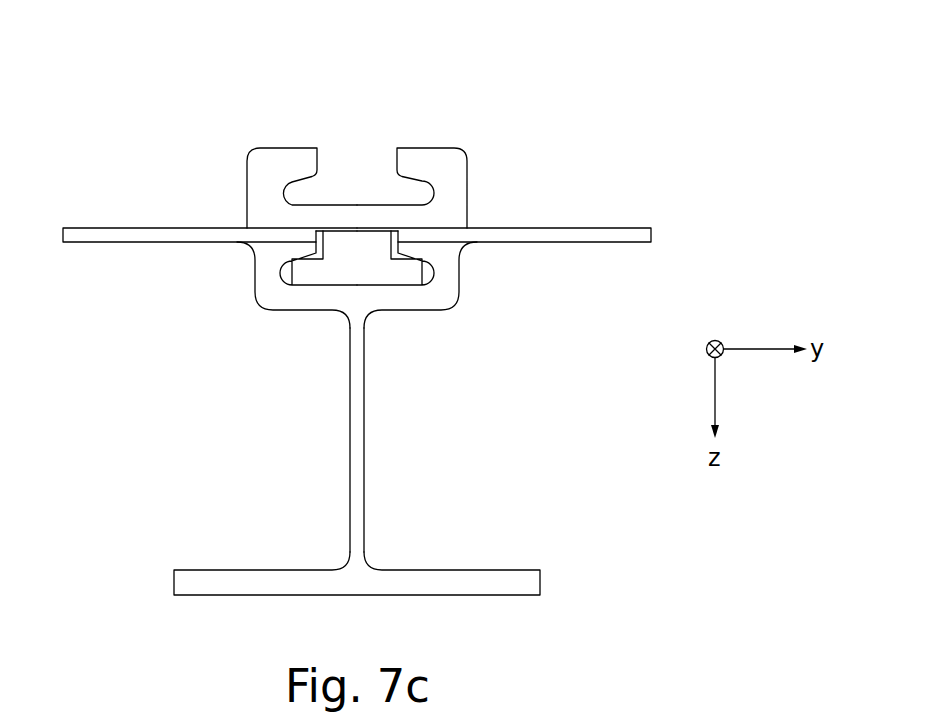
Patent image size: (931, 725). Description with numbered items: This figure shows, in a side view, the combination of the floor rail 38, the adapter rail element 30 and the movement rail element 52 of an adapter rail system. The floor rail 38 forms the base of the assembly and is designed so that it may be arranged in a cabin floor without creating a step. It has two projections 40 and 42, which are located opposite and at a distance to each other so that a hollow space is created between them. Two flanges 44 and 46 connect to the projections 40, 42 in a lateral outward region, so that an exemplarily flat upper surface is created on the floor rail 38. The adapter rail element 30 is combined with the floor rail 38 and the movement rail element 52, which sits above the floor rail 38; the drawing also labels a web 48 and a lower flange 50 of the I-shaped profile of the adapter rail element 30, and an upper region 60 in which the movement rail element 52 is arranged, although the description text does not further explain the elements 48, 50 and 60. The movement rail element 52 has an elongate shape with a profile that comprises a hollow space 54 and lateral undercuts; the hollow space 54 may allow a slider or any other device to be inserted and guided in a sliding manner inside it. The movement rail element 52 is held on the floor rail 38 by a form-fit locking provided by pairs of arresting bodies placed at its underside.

The adapter rail element 30 is at (376, 418).
The floor rail 38 is at (240, 452).
The projection 40 is at (273, 228).
The projection 42 is at (423, 228).
The flange 44 is at (104, 228).
The flange 46 is at (633, 229).
The web of beam 48 is at (360, 430).
The lower flange of beam 50 is at (522, 580).
The movement rail element 52 is at (287, 157).
The hollow space 54 is at (360, 152).
The clamp element 60 is at (392, 125).